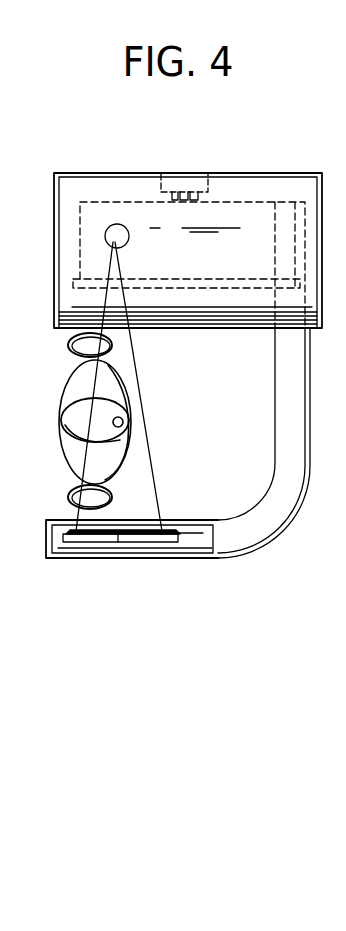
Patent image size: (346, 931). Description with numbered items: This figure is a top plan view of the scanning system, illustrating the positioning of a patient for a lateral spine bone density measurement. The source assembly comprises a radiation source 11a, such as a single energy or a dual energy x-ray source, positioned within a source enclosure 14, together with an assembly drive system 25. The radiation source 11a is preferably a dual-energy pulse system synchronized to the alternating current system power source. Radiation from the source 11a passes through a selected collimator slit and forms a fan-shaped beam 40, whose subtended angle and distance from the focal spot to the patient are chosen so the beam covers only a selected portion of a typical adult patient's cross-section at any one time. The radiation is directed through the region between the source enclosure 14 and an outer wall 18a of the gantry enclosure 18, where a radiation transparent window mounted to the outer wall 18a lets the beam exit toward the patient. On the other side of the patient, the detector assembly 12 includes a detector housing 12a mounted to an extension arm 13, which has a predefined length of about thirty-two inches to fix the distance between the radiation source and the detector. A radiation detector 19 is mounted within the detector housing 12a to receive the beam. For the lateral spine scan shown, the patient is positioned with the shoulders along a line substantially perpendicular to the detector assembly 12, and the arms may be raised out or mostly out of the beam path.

The gantry enclosure 18 is at (60, 172).
The outer wall 18a is at (228, 329).
The source enclosure 14 is at (245, 200).
The assembly drive system 25 is at (196, 175).
The radiation source 11a is at (105, 233).
The fan-shaped beam 40 is at (150, 448).
The extension arm 13 is at (280, 541).
The detector assembly 12 is at (157, 559).
The detector housing 12a is at (203, 551).
The radiation detector 19 is at (84, 543).